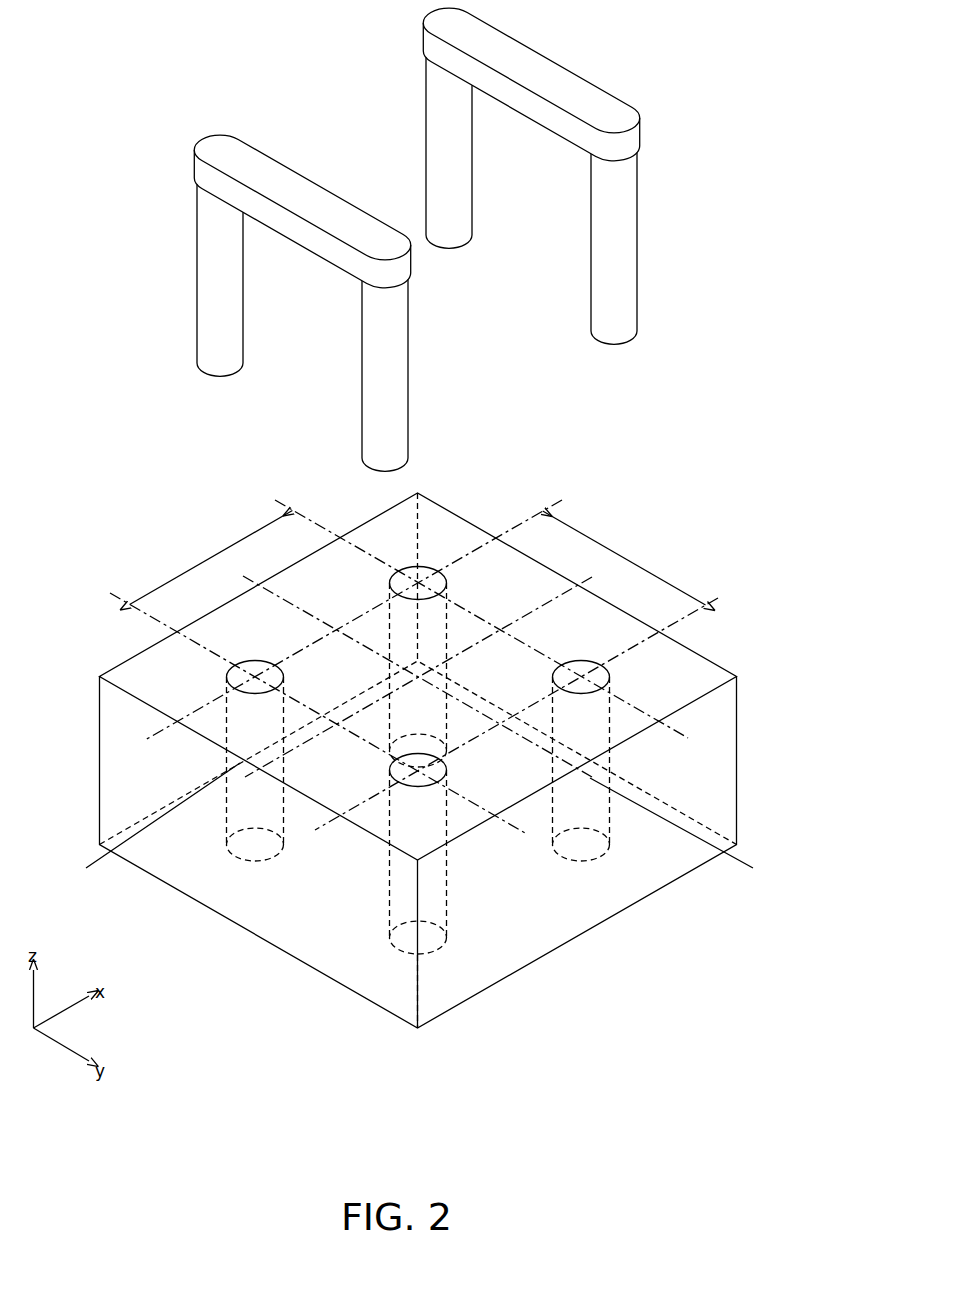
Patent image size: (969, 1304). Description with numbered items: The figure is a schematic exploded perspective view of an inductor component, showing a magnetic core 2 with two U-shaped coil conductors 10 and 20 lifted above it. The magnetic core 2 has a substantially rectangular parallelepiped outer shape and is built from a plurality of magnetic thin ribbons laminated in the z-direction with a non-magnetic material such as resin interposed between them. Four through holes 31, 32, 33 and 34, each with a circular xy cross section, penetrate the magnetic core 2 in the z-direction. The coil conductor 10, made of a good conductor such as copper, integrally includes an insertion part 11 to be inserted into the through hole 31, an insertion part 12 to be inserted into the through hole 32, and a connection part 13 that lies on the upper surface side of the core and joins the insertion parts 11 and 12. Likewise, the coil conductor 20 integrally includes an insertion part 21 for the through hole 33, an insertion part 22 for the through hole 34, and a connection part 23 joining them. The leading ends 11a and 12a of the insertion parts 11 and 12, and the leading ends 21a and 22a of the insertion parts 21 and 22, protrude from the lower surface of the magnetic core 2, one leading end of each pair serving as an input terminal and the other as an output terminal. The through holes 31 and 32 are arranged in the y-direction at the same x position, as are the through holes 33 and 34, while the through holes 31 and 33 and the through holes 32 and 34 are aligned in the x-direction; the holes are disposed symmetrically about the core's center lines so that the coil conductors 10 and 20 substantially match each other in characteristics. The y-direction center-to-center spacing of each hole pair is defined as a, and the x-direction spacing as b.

The coil conductor 10 is at (362, 49).
The insertion part 11 is at (423, 189).
The leading end 11a is at (444, 244).
The insertion part 12 is at (655, 264).
The leading end 12a is at (618, 337).
The connection part 13 is at (531, 67).
The coil conductor 20 is at (144, 170).
The insertion part 21 is at (186, 295).
The leading end 21a is at (220, 366).
The insertion part 22 is at (425, 388).
The leading end 22a is at (390, 458).
The connection part 23 is at (282, 182).
The magnetic core 2 is at (422, 751).
The through hole 31 is at (408, 578).
The through hole 32 is at (610, 668).
The through hole 33 is at (250, 686).
The through hole 34 is at (425, 777).